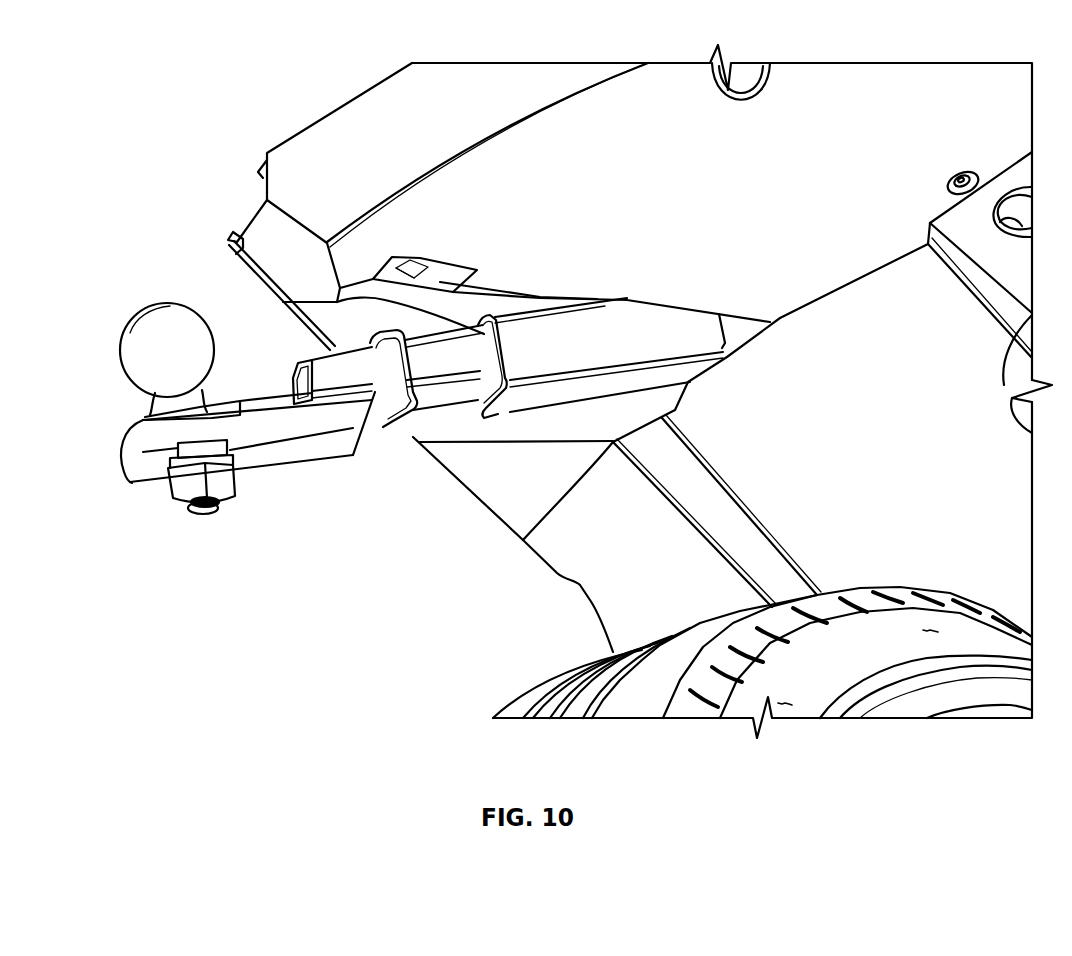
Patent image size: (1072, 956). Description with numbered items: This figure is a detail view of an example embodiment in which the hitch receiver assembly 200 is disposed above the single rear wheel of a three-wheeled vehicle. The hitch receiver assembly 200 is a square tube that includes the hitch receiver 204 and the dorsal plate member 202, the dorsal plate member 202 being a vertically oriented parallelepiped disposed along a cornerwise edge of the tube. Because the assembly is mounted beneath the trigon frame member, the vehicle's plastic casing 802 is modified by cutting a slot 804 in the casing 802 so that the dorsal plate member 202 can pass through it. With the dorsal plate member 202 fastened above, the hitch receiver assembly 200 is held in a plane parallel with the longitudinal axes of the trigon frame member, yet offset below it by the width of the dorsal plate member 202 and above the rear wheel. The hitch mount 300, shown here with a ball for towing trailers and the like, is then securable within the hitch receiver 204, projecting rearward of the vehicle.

The plastic casing 802 is at (728, 204).
The dorsal plate member 202 is at (533, 302).
The hitch receiver assembly 200 is at (650, 403).
The slot 804 is at (600, 300).
The hitch receiver 204 is at (412, 424).
The hitch mount 300 is at (100, 453).